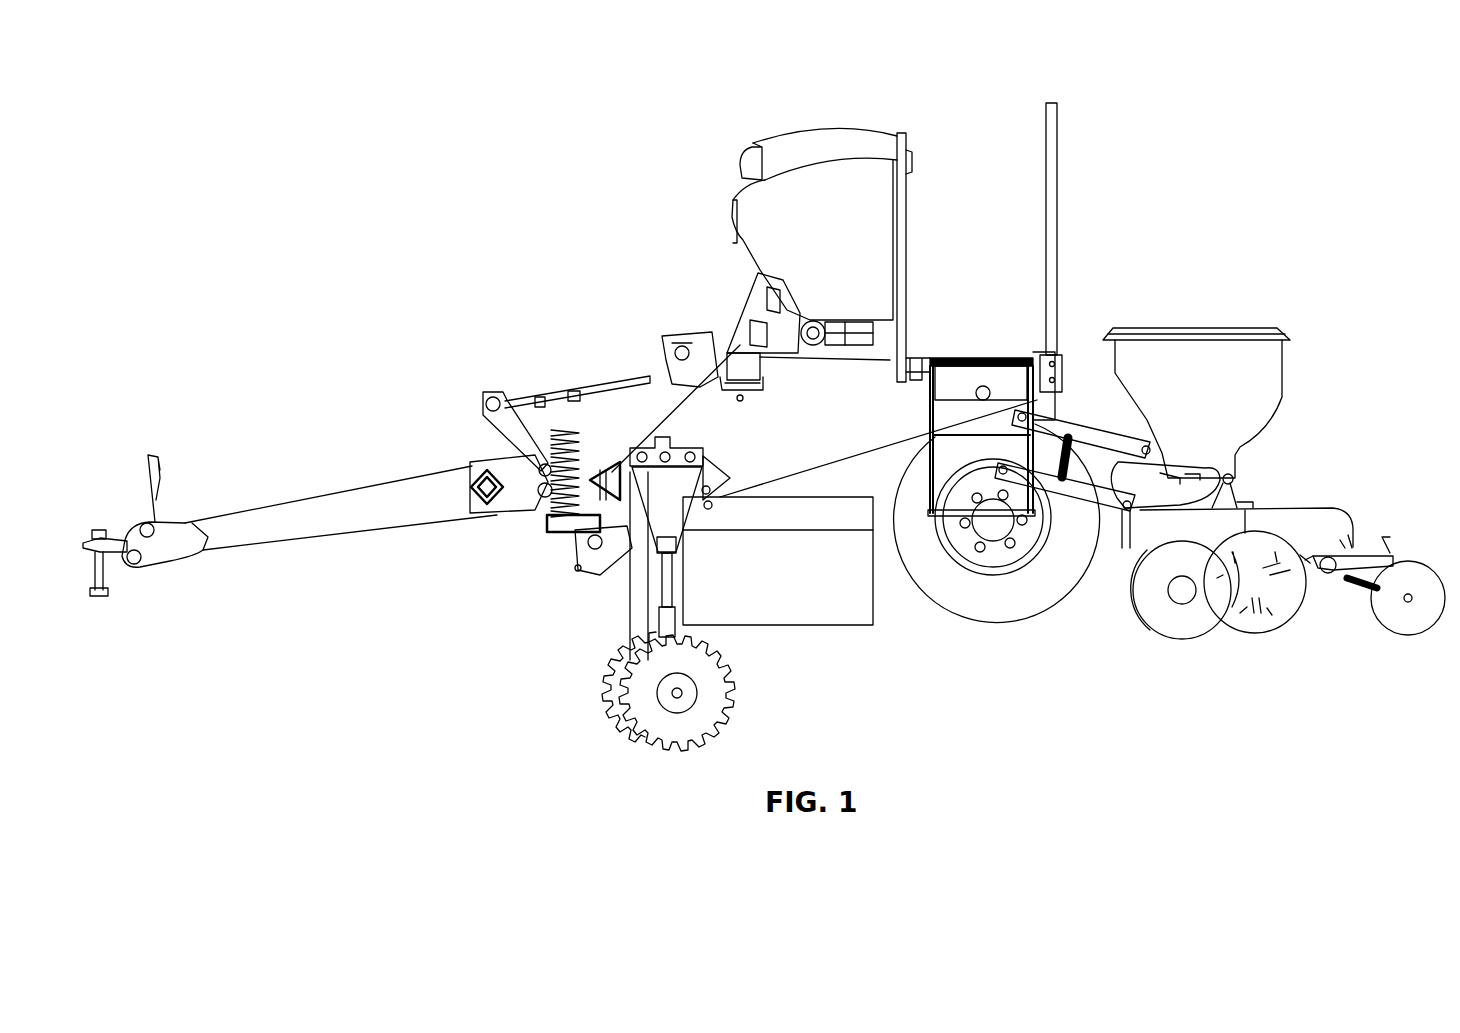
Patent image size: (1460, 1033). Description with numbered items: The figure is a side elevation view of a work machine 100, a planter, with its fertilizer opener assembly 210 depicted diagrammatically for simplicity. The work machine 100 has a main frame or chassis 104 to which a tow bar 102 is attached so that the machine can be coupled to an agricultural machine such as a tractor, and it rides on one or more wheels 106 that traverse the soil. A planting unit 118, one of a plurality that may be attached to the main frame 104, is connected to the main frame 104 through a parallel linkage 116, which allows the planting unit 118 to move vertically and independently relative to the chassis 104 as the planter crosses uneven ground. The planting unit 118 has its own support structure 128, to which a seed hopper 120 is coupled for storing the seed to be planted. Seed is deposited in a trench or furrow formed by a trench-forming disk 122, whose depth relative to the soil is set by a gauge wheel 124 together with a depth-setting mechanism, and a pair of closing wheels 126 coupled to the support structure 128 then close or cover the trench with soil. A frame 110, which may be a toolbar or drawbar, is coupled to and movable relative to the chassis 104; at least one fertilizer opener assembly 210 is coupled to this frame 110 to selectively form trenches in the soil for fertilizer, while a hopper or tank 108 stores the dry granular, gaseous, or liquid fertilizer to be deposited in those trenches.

The work machine 100 is at (269, 107).
The tow bar 102 is at (330, 503).
The main frame 104 is at (690, 412).
The wheels 106 is at (1030, 593).
The hopper 108 is at (826, 188).
The frame 110 is at (800, 495).
The parallel linkage 116 is at (1104, 400).
The planting unit 118 is at (1325, 400).
The seed hopper 120 is at (1200, 358).
The trench-forming disk 122 is at (1183, 630).
The gauge wheel 124 is at (1260, 622).
The closing wheels 126 is at (1408, 617).
The support structure 128 is at (1313, 517).
The fertilizer opener assembly 210 is at (847, 625).